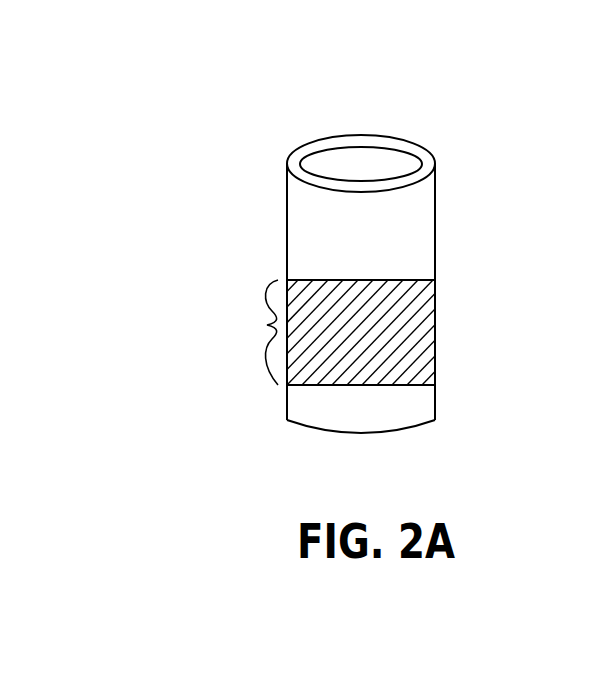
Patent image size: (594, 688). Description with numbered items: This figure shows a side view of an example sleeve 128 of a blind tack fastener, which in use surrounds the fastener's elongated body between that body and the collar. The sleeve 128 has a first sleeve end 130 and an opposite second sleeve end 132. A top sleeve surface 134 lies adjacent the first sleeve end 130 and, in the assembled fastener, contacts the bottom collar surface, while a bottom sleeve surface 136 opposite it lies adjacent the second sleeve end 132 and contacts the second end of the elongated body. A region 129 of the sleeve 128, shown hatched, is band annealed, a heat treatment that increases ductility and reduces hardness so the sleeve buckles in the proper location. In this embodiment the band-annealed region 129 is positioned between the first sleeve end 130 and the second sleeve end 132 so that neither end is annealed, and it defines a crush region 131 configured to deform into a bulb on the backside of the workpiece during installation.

The sleeve 128 is at (268, 111).
The region of the sleeve that is band annealed 129 is at (270, 325).
The first sleeve end 130 is at (452, 170).
The crush region 131 is at (400, 318).
The second sleeve end 132 is at (452, 430).
The top sleeve surface 134 is at (409, 139).
The bottom sleeve surface 136 is at (320, 446).